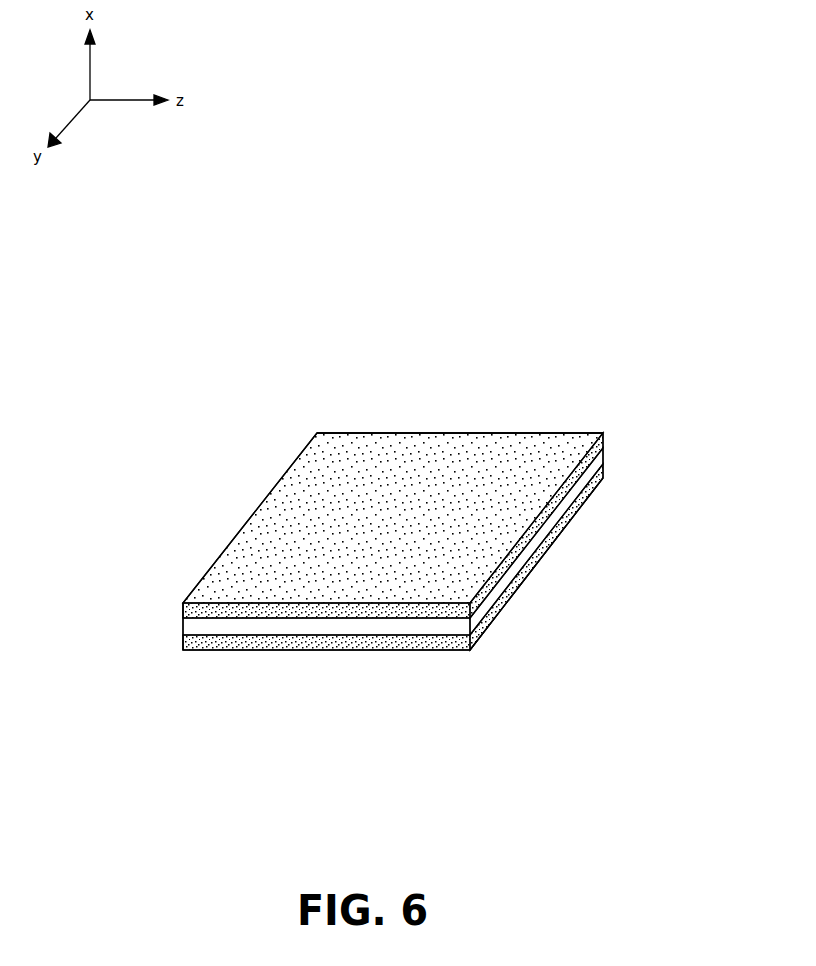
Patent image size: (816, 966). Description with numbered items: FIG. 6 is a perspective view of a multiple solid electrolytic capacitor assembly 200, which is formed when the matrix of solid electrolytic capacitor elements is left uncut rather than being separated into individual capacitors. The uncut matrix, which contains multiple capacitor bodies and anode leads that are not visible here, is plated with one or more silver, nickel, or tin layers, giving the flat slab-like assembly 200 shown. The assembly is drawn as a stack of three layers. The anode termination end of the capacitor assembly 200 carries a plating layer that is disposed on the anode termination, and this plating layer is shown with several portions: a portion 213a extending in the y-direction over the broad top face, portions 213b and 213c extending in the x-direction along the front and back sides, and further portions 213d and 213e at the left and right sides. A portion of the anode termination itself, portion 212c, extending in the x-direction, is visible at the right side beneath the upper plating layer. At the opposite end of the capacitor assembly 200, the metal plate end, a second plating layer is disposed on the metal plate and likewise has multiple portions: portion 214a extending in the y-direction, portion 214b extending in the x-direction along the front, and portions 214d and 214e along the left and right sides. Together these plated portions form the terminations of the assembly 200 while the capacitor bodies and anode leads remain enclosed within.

The solid electrolytic capacitor assembly 200 is at (254, 370).
The plating layer portion 213a is at (420, 455).
The plating layer portion 213b is at (238, 610).
The plating layer portion 213c is at (563, 432).
The plating layer portion 213d is at (183, 610).
The plating layer portion 213e is at (603, 450).
The anode termination portion 212c is at (603, 470).
The plating layer portion 214a is at (503, 606).
The plating layer portion 214b is at (325, 640).
The plating layer portion 214d is at (183, 640).
The plating layer portion 214e is at (545, 552).